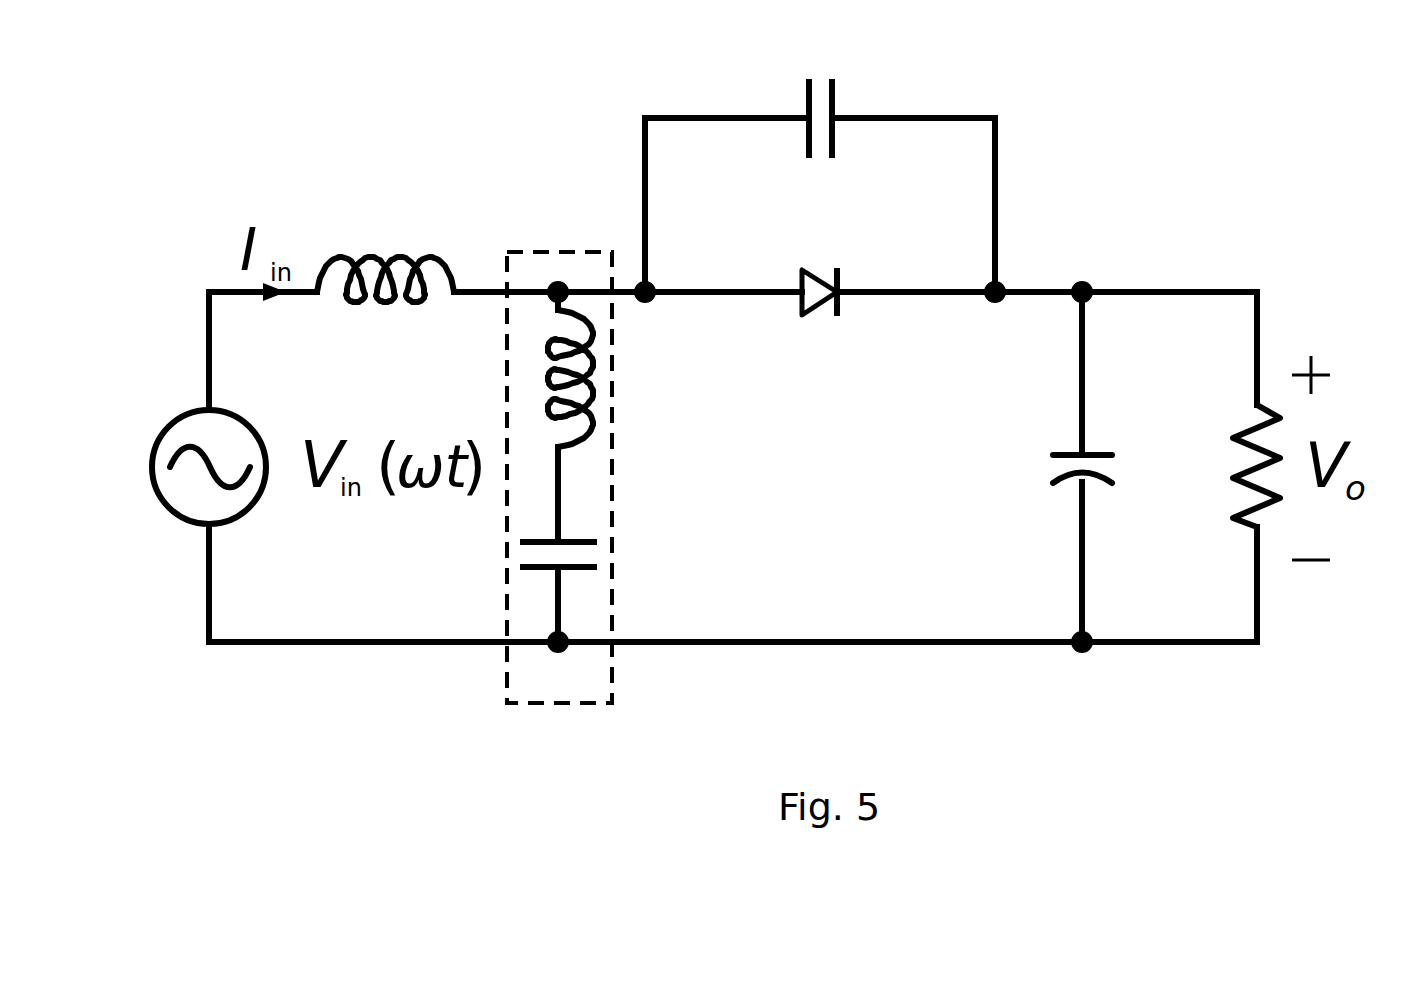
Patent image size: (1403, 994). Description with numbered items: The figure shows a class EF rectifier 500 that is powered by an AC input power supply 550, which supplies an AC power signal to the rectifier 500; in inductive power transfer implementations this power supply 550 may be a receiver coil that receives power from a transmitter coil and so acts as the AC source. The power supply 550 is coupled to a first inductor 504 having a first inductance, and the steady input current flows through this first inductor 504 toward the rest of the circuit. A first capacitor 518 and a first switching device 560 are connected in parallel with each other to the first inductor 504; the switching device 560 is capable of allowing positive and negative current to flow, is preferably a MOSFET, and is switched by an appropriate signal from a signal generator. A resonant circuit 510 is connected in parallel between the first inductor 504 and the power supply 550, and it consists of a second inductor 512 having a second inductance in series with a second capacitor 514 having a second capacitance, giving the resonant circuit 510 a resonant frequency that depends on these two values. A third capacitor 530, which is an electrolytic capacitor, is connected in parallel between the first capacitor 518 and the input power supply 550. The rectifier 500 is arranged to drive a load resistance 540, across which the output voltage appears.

The rectifier 500 is at (1139, 182).
The first inductor 504 is at (412, 255).
The resonant circuit 510 is at (592, 703).
The second inductor 512 is at (550, 390).
The second capacitor 514 is at (597, 542).
The first capacitor 518 is at (827, 147).
The third capacitor 530 is at (1043, 460).
The load resistance 540 is at (1235, 515).
The AC input power supply 550 is at (253, 517).
The first switching device 560 is at (800, 312).